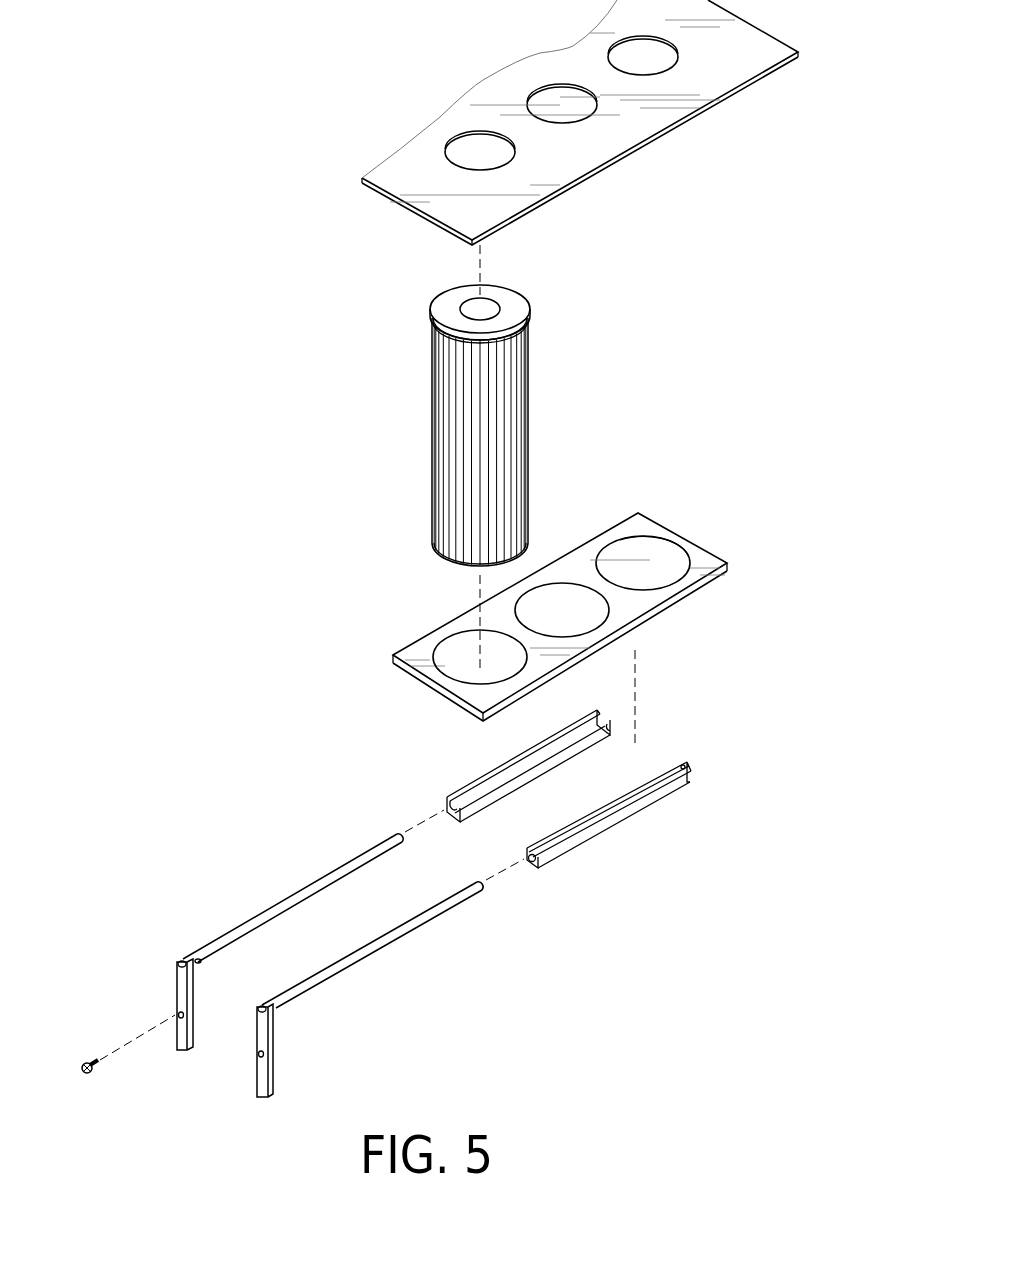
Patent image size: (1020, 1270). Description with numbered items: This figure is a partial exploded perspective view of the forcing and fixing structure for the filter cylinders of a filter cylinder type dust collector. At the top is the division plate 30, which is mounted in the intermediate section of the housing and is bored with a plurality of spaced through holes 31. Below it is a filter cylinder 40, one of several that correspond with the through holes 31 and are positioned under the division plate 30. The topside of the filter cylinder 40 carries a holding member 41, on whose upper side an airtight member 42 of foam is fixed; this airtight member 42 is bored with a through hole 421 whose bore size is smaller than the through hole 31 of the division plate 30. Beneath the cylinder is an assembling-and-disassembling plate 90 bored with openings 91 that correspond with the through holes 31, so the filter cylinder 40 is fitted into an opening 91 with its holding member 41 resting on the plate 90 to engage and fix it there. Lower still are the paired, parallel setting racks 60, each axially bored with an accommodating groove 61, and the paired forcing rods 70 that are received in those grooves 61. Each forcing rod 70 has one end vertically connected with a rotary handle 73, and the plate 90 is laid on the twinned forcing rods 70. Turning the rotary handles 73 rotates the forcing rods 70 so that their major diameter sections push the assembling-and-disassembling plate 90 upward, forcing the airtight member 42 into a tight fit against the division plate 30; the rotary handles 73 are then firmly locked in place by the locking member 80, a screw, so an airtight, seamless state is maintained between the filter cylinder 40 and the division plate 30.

The division plate 30 is at (392, 207).
The through hole 31 is at (474, 147).
The filter cylinder 40 is at (548, 435).
The holding member 41 is at (432, 315).
The airtight member 42 is at (517, 305).
The through hole 421 is at (489, 307).
The assembling-and-disassembling plate 90 is at (426, 692).
The opening 91 is at (455, 657).
The setting rack 60 is at (630, 830).
The accommodating groove 61 is at (478, 797).
The forcing rod 70 is at (262, 906).
The rotary handle 73 is at (178, 985).
The locking member 80 is at (93, 1050).